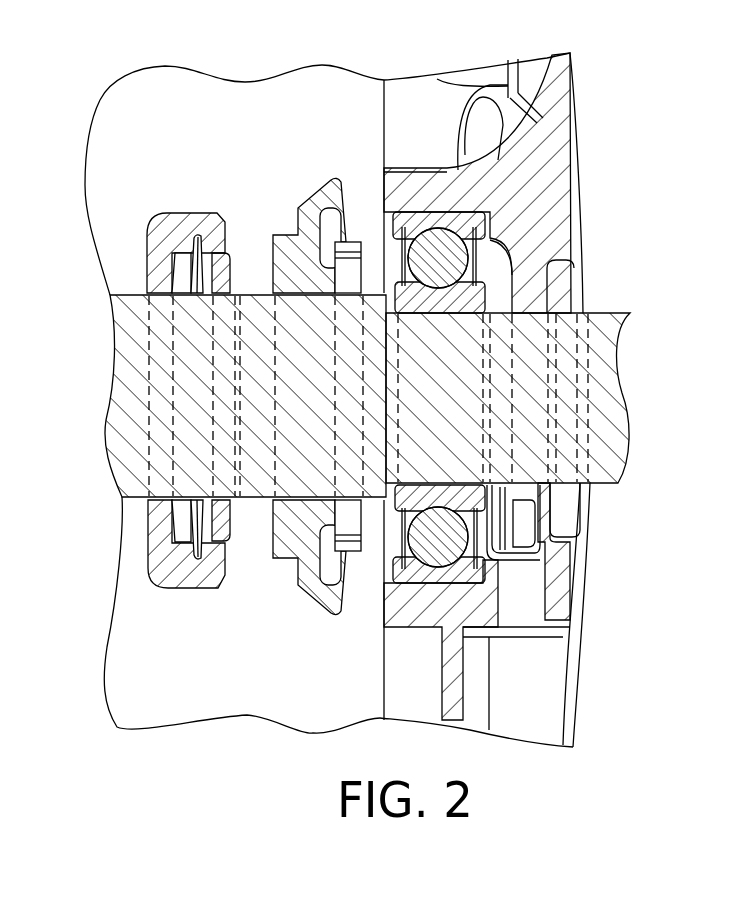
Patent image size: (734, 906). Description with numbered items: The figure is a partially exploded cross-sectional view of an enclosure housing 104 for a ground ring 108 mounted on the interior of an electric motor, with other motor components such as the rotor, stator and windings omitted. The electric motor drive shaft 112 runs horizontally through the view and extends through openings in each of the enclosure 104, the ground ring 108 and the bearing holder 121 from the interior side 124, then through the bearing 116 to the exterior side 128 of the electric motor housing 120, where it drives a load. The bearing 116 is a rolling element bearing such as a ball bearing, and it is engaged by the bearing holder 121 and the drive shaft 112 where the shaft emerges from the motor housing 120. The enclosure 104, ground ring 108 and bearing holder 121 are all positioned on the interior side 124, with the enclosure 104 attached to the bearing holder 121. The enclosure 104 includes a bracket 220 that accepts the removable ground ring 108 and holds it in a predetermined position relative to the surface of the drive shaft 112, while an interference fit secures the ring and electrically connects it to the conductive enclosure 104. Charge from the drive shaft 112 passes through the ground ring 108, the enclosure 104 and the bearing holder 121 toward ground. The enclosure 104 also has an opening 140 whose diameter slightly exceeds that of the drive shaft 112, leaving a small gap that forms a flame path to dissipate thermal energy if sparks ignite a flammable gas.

The enclosure housing 104 is at (150, 556).
The ground ring 108 is at (237, 280).
The electric motor drive shaft 112 is at (135, 295).
The bearing 116 is at (492, 273).
The electric motor housing 120 is at (575, 183).
The bearing holder 121 is at (333, 617).
The interior side 124 is at (227, 123).
The exterior side 128 is at (690, 113).
The opening 140 is at (130, 396).
The bracket 220 is at (200, 534).